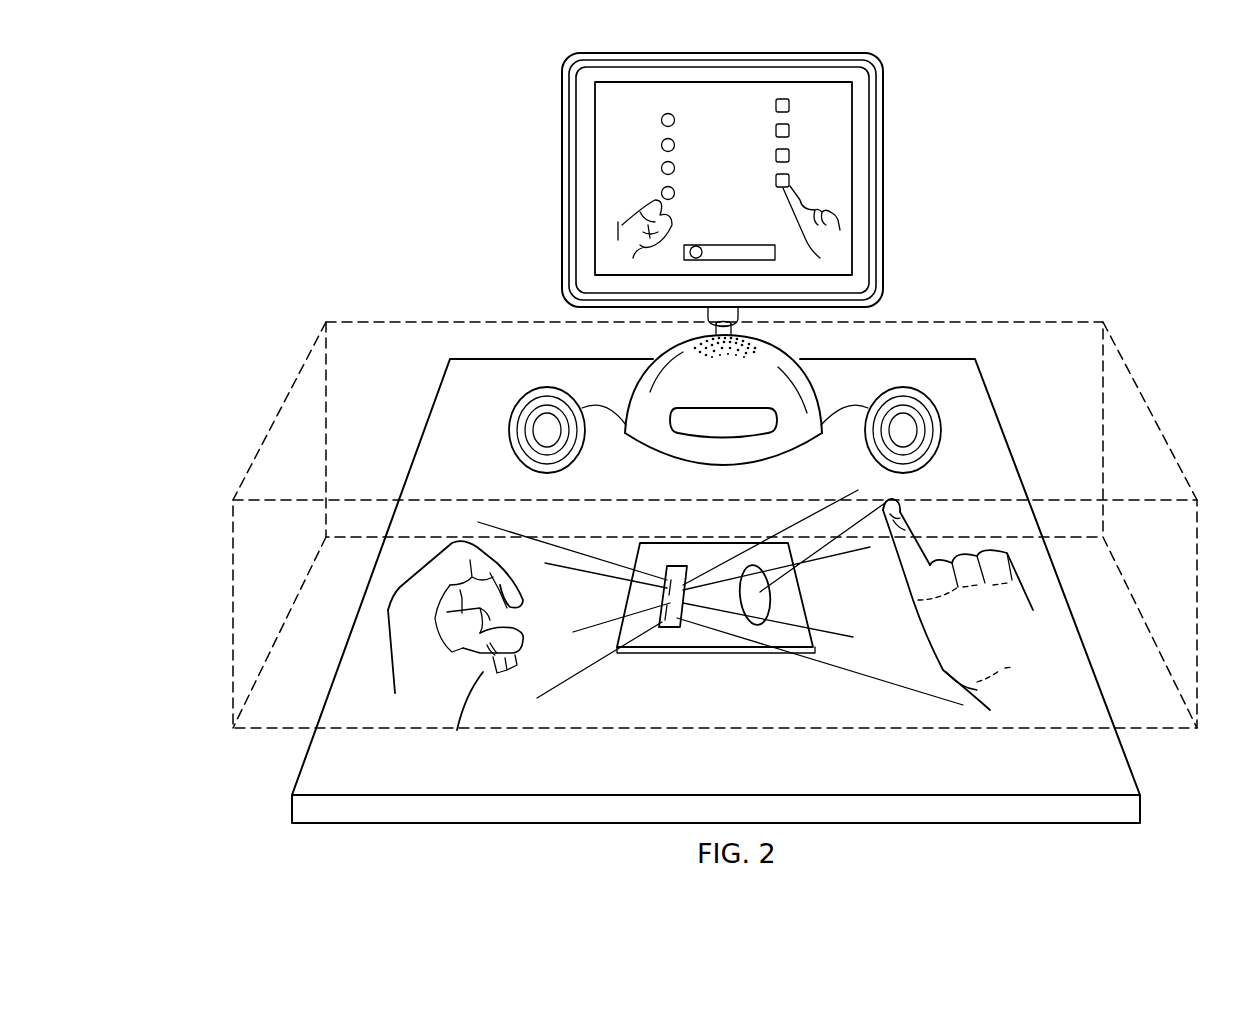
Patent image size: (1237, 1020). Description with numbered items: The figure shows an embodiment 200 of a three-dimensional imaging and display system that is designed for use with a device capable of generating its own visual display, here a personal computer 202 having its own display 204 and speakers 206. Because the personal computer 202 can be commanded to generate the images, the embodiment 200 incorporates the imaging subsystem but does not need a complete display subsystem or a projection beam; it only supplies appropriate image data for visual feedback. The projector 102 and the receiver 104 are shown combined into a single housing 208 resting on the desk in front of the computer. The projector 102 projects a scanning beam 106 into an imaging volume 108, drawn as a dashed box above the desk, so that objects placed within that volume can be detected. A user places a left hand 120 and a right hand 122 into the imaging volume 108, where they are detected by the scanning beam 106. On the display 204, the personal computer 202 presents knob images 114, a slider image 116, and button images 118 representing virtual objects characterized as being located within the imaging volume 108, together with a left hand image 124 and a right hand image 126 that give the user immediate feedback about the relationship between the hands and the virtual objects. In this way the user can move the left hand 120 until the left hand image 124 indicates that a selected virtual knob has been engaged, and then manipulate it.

The embodiment 200 is at (323, 115).
The display 204 is at (885, 110).
The button images 118 is at (790, 155).
The knob images 114 is at (662, 168).
The left hand image 124 is at (628, 220).
The right hand image 126 is at (822, 232).
The slider image 116 is at (750, 252).
The projector 102 is at (665, 582).
The speakers 206 is at (667, 572).
The receiver 104 is at (770, 588).
The personal computer 202 is at (790, 397).
The imaging volume 108 is at (1125, 397).
The left hand 120 is at (417, 630).
The right hand 122 is at (1025, 625).
The scanning beam 106 is at (840, 633).
The housing 208 is at (790, 595).